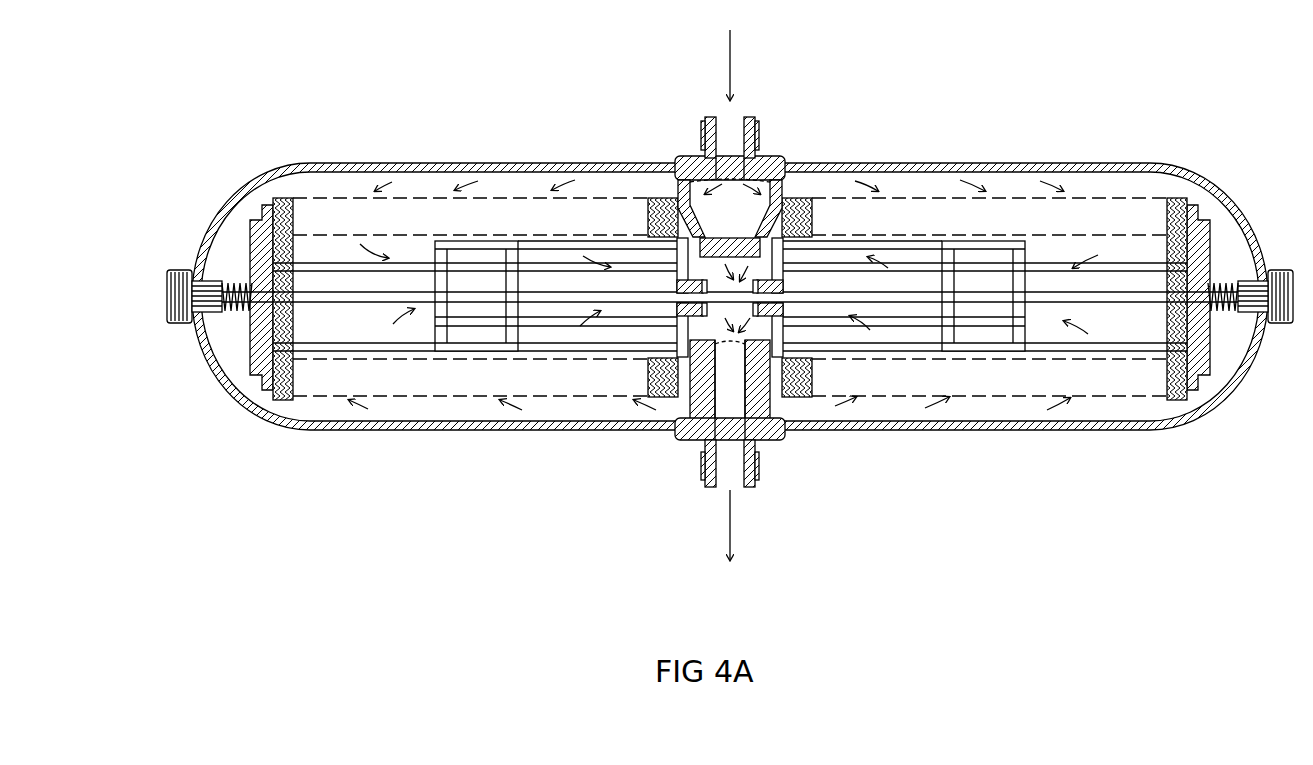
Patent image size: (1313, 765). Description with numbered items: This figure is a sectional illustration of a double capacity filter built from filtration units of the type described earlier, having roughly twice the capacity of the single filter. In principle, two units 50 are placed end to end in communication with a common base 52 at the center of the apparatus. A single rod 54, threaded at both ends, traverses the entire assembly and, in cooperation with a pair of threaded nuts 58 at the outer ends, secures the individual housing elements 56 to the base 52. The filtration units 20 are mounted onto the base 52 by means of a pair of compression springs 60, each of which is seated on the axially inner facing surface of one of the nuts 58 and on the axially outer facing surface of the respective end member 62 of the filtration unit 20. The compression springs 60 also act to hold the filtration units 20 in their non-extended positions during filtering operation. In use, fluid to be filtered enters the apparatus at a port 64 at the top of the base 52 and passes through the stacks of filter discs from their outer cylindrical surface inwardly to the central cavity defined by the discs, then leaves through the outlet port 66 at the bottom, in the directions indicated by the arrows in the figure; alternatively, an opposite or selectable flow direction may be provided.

The filtration unit 20 is at (494, 196).
The unit 50 is at (583, 157).
The base 52 is at (768, 432).
The rod 54 is at (903, 296).
The housing element 56 is at (400, 163).
The threaded nut 58 is at (181, 324).
The compression spring 60 is at (238, 290).
The end member 62 is at (283, 198).
The port 64 is at (706, 128).
The outlet port 66 is at (712, 486).